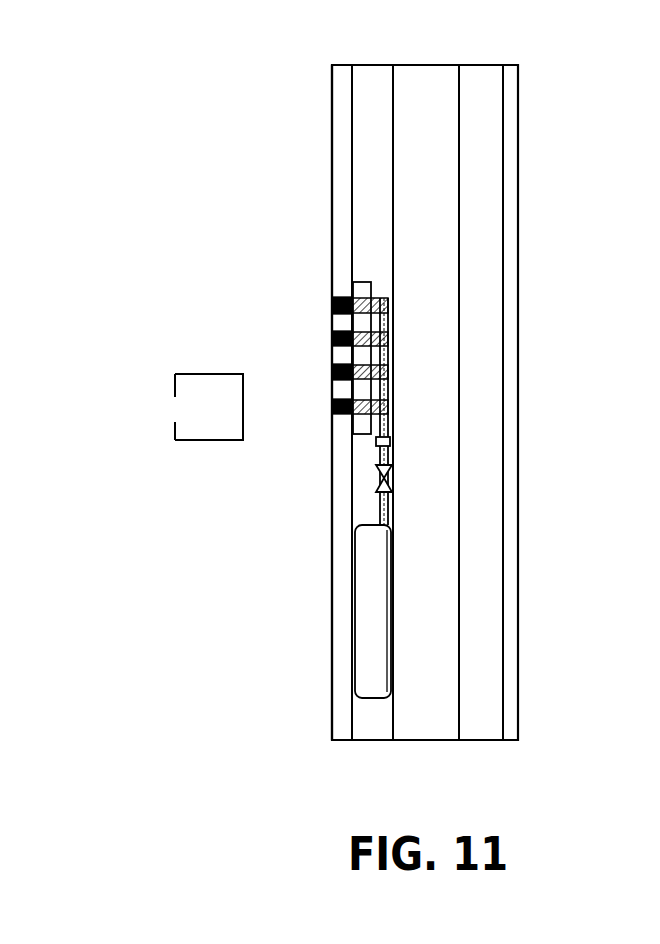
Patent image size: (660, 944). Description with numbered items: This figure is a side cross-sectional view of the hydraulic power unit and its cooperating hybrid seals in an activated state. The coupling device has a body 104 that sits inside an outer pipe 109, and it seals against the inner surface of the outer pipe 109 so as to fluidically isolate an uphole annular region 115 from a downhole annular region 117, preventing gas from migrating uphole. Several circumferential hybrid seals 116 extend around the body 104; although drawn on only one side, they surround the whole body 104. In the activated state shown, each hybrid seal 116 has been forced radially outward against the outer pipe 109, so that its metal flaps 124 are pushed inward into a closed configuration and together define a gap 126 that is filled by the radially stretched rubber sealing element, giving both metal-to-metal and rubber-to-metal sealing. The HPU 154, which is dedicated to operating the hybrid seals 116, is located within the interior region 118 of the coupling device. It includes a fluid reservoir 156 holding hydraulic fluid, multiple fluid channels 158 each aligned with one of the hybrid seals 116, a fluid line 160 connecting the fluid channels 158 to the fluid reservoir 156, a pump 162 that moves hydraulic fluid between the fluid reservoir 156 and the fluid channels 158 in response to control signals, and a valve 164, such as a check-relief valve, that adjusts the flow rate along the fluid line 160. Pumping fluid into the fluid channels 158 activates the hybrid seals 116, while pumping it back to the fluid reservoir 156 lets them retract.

The body 104 is at (505, 142).
The outer pipe 109 is at (518, 88).
The uphole annular region 115 is at (339, 135).
The hybrid seal 116 is at (332, 338).
The downhole annular region 117 is at (341, 628).
The interior region 118 is at (487, 217).
The flaps 124 is at (175, 390).
The gap 126 is at (157, 406).
The HPU 154 is at (333, 591).
The fluid reservoir 156 is at (372, 698).
The fluid channels 158 is at (389, 335).
The fluid line 160 is at (378, 511).
The pump 162 is at (402, 480).
The valve 164 is at (391, 440).